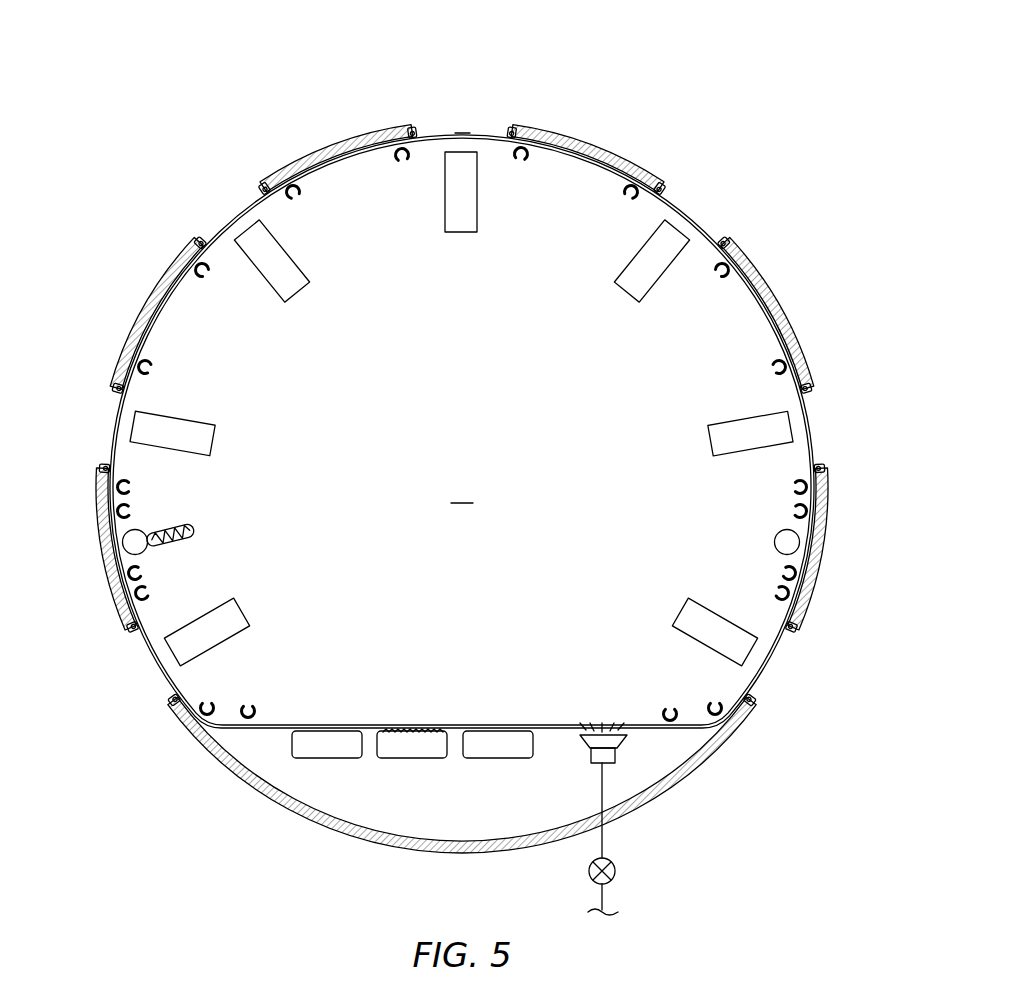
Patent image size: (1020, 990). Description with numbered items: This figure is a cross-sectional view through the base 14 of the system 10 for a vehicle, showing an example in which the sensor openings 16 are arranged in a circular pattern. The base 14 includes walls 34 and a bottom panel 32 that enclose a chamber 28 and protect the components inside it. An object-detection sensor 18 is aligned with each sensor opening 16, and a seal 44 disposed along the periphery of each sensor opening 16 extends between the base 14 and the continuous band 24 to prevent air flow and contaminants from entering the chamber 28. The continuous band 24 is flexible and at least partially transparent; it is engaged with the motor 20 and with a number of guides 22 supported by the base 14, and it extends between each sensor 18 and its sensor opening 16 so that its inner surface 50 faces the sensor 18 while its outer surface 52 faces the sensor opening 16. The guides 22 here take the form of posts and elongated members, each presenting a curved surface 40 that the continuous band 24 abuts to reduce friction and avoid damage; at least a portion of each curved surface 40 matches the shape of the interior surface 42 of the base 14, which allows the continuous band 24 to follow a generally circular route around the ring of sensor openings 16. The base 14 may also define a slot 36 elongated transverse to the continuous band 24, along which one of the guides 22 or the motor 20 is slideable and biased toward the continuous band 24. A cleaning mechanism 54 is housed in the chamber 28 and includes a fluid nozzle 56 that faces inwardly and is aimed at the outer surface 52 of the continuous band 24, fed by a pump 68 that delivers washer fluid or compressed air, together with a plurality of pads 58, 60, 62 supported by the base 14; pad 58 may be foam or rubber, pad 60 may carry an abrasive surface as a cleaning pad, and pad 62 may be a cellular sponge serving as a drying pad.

The system 10 is at (765, 80).
The base 14 is at (222, 740).
The sensor opening 16 is at (448, 105).
The object-detection sensor 18 is at (460, 234).
The motor 20 is at (772, 540).
The guide 22 is at (358, 160).
The continuous band 24 is at (470, 130).
The chamber 28 is at (655, 352).
The bottom panel 32 is at (462, 490).
The walls 34 is at (322, 167).
The slot 36 is at (194, 528).
The curved surface 40 is at (335, 147).
The interior surface 42 is at (152, 312).
The seal 44 is at (410, 127).
The inner surface 50 is at (292, 724).
The outer surface 52 is at (262, 764).
The cleaning mechanism 54 is at (405, 805).
The fluid nozzle 56 is at (612, 763).
The pad 58 is at (497, 759).
The pad 60 is at (413, 759).
The pad 62 is at (328, 759).
The pump 68 is at (615, 875).